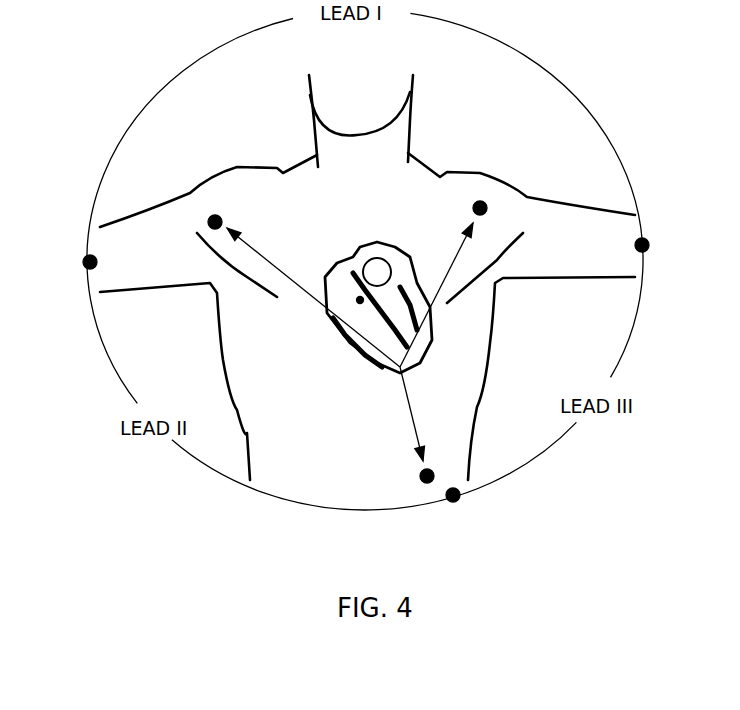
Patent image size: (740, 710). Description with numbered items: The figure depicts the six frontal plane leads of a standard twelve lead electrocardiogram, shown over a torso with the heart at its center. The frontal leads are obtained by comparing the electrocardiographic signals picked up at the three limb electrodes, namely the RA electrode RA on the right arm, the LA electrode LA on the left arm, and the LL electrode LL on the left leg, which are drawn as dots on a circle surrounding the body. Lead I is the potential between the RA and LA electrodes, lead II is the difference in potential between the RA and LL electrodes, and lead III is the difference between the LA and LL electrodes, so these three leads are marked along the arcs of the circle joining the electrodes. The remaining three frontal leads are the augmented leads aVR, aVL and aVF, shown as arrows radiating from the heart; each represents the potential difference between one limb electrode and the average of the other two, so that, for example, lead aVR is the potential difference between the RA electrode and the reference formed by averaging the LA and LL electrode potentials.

The RA electrode RA is at (70, 265).
The LA electrode LA is at (661, 245).
The LL electrode LL is at (448, 509).
The lead aVR is at (304, 281).
The lead aVL is at (465, 283).
The lead aVF is at (407, 428).